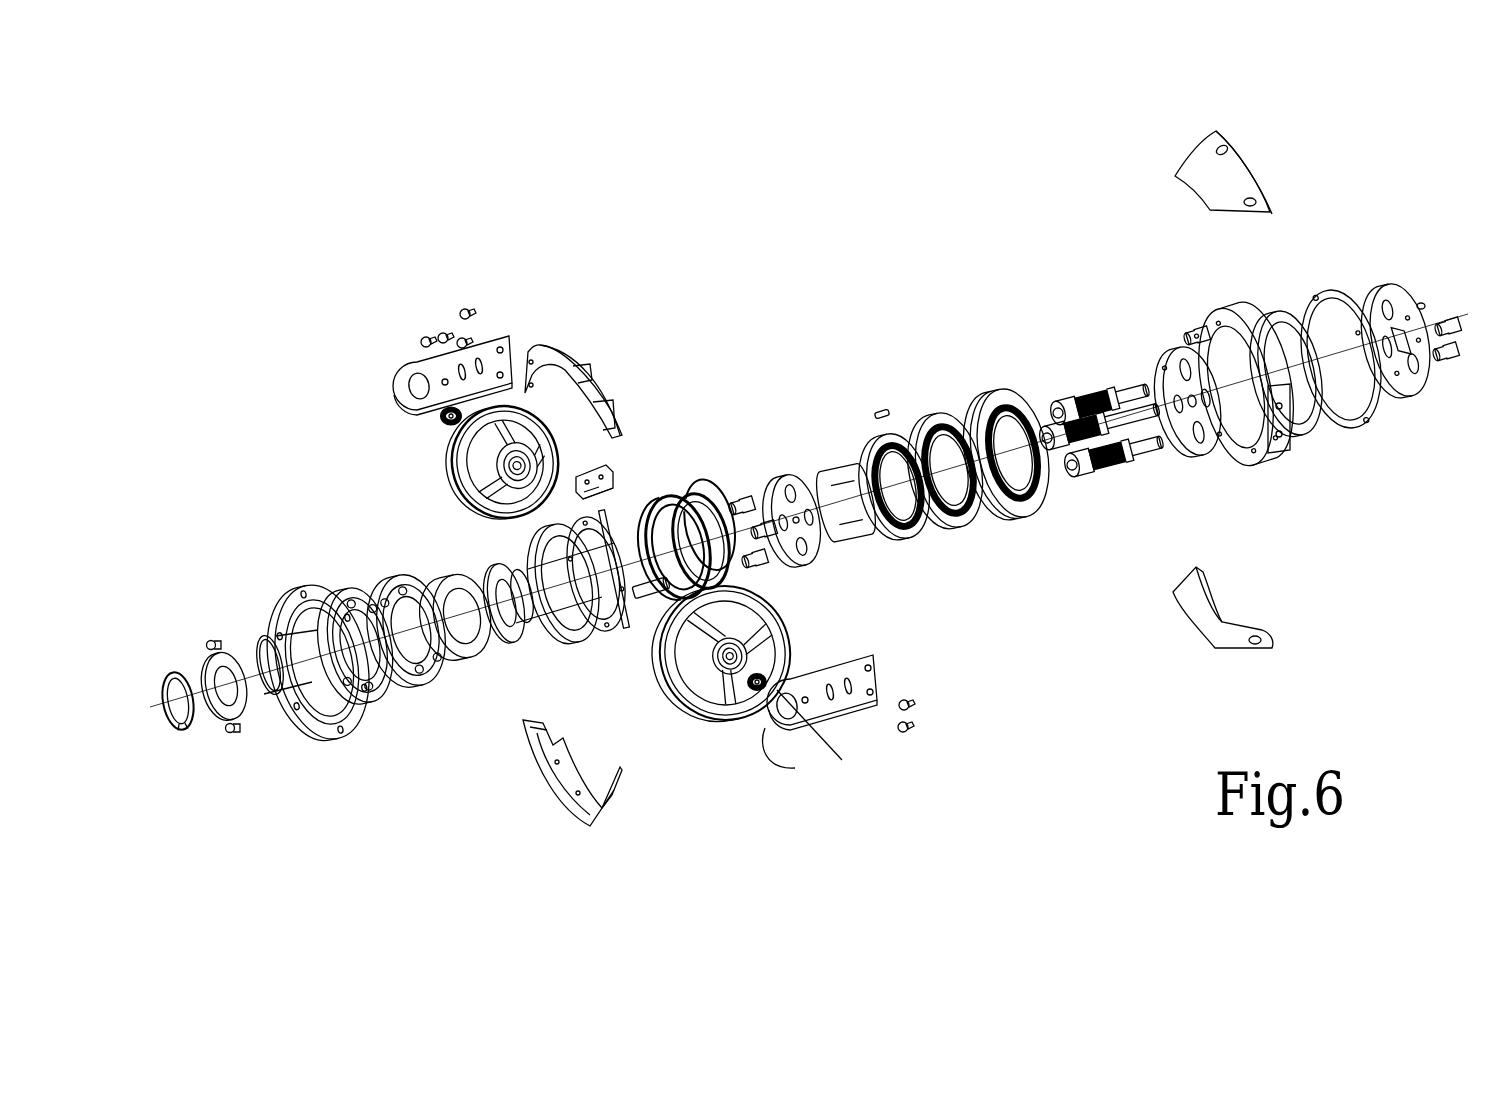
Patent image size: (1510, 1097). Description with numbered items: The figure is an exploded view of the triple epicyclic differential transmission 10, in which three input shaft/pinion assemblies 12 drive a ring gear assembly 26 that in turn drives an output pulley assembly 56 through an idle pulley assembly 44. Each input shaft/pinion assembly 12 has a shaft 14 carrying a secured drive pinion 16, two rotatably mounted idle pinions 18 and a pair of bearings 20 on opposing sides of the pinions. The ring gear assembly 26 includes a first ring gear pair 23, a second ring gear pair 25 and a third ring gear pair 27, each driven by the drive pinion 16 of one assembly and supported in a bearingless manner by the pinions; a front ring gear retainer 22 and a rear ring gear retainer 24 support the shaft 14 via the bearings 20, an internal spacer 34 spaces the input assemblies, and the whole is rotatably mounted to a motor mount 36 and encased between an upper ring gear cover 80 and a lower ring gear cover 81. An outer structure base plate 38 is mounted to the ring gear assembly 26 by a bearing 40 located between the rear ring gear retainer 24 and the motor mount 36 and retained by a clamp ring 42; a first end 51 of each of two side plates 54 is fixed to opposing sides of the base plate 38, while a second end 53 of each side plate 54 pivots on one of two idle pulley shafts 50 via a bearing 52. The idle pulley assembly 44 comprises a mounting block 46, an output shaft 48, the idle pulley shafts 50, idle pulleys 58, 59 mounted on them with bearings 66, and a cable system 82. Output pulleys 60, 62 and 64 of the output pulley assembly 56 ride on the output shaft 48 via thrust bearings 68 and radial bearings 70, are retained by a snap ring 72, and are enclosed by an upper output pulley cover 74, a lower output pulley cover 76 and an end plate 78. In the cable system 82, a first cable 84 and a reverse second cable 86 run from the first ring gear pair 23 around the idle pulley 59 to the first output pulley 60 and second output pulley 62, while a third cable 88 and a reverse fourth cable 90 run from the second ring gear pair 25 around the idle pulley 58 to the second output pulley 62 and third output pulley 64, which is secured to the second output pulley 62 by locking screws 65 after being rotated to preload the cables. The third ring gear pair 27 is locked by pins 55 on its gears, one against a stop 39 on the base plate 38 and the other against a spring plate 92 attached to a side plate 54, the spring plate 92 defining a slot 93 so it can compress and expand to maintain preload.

The triple epicyclic differential transmission 10 is at (818, 483).
The input shaft/pinion assembly 12 is at (1092, 398).
The shaft 14 is at (1142, 451).
The drive pinion 16 is at (1124, 460).
The idle pinions 18 is at (1124, 455).
The bearings 20 is at (1092, 426).
The front ring gear retainer 22 is at (788, 470).
The first ring gear pair 23 is at (914, 534).
The rear ring gear retainer 24 is at (1210, 456).
The second ring gear pair 25 is at (976, 521).
The ring gear assembly 26 is at (905, 430).
The third ring gear pair 27 is at (1040, 506).
The internal spacer 34 is at (835, 461).
The motor mount 36 is at (1426, 406).
The outer structure base plate 38 is at (1266, 466).
The stop 39 is at (1190, 332).
The bearing 40 is at (1305, 441).
The clamp ring 42 is at (1365, 426).
The idle pulley assembly 44 is at (640, 515).
The mounting block 46 is at (625, 630).
The output shaft 48 is at (527, 560).
The idle pulley shafts 50 is at (628, 606).
The first end 51 is at (878, 696).
The bearing 52 is at (438, 418).
The second end 53 is at (802, 736).
The side plates 54 is at (420, 356).
The pins 55 is at (882, 410).
The output pulley assembly 56 is at (343, 653).
The idle pulley 58 is at (756, 699).
The idle pulley 59 is at (446, 467).
The first output pulley 60 is at (438, 568).
The second output pulley 62 is at (388, 572).
The third output pulley 64 is at (333, 580).
The locking screws 65 is at (206, 645).
The bearings 66 is at (748, 646).
The thrust bearings 68 is at (236, 743).
The radial bearings 70 is at (283, 673).
The snap ring 72 is at (186, 732).
The upper output pulley cover 74 is at (549, 343).
The lower output pulley cover 76 is at (606, 815).
The end plate 78 is at (283, 585).
The upper ring gear cover 80 is at (1178, 150).
The lower ring gear cover 81 is at (1280, 646).
The cable system 82 is at (590, 663).
The first cable 84 is at (673, 494).
The second cable 86 is at (728, 588).
The third cable 88 is at (706, 500).
The fourth cable 90 is at (560, 643).
The spring plate 92 is at (624, 447).
The slot 93 is at (618, 482).